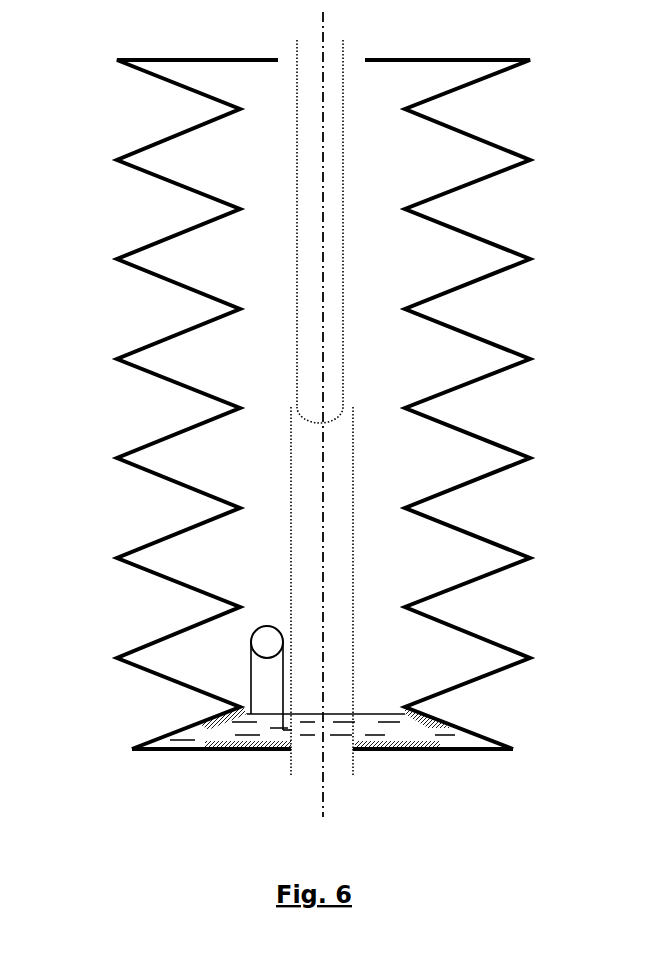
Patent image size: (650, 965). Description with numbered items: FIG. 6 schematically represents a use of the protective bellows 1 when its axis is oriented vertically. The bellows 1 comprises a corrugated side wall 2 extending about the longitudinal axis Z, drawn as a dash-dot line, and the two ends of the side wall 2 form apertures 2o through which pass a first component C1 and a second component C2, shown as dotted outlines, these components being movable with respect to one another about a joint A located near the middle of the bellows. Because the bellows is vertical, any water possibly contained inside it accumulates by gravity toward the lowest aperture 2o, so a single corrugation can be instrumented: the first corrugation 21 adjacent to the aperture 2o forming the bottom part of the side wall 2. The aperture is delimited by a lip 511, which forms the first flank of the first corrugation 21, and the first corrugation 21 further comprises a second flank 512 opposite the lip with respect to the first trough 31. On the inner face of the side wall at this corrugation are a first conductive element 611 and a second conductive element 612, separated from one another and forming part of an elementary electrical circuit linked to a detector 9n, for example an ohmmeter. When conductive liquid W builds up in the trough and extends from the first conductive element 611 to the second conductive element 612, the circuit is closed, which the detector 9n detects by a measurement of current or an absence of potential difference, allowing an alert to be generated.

The protective bellows 1 is at (279, 404).
The side wall 2 is at (132, 592).
The first corrugation 21 is at (274, 742).
The first trough 31 is at (132, 743).
The lip 511 is at (160, 752).
The second flank 512 is at (158, 736).
The first conductive element 611 is at (250, 752).
The second conductive element 612 is at (205, 723).
The detector 9n is at (271, 636).
The aperture 2o is at (306, 783).
The first component C1 is at (312, 264).
The second component C2 is at (312, 485).
The joint A is at (300, 410).
The conductive liquid W is at (400, 728).
The longitudinal axis Z is at (333, 414).